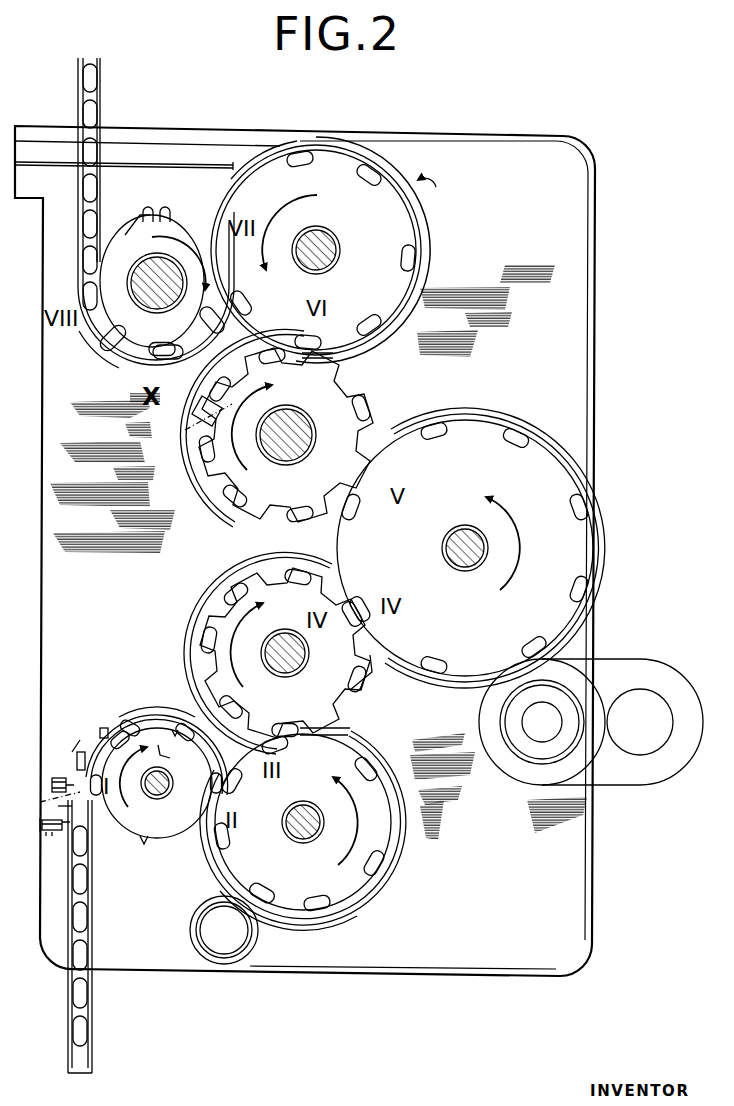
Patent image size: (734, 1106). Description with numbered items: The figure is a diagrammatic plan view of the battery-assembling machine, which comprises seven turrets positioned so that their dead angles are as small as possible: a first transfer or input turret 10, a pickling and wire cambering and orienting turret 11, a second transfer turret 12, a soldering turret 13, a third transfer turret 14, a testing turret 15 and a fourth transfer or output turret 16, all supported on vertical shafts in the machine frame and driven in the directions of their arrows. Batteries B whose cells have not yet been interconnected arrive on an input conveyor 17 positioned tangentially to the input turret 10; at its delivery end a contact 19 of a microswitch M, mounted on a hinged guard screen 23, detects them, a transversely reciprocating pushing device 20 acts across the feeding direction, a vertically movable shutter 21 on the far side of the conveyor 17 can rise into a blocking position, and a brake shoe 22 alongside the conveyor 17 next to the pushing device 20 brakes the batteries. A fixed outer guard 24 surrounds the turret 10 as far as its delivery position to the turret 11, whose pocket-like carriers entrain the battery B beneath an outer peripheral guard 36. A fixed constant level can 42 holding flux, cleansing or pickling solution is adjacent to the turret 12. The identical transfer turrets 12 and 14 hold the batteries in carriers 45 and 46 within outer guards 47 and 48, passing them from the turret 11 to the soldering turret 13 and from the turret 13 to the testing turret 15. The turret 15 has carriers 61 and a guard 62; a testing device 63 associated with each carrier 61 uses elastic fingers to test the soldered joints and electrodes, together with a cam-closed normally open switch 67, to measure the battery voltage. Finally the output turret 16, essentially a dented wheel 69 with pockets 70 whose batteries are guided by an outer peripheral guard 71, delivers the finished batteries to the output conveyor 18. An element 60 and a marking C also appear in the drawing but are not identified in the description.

The first transfer or input turret 10 is at (174, 830).
The pickling and wire cambering and orienting turret 11 is at (378, 893).
The second transfer turret 12 is at (350, 700).
The soldering turret 13 is at (484, 455).
The third transfer turret 14 is at (368, 442).
The testing turret 15 is at (340, 185).
The fourth transfer or output turret 16 is at (190, 232).
The input conveyor 17 is at (76, 1050).
The output conveyor 18 is at (78, 82).
The contact 19 is at (77, 760).
The pushing device 20 is at (52, 782).
The shutter 21 is at (52, 800).
The brake shoe 22 is at (62, 830).
The guard screen 23 is at (102, 734).
The fixed outer guard 24 is at (152, 712).
The outer peripheral guard 36 is at (338, 922).
The constant level container can 42 is at (233, 955).
The carriers 45 is at (370, 672).
The carriers 46 is at (247, 512).
The outer guard 47 is at (190, 656).
The outer guard 48 is at (222, 500).
The drive motor 60 is at (512, 762).
The carriers 61 is at (286, 250).
The guard 62 is at (427, 247).
The testing device 63 is at (200, 432).
The normally open switch 67 is at (437, 190).
The dented wheel 69 is at (135, 228).
The pockets or recesses 70 is at (172, 320).
The lower guide 71 is at (137, 366).
The batteries B is at (86, 986).
The capsule C is at (167, 755).
The microswitch M is at (73, 752).